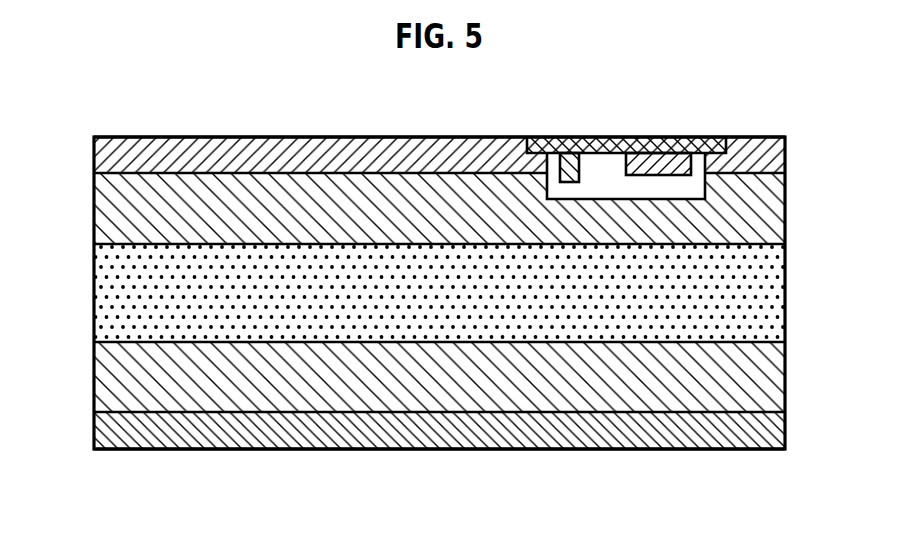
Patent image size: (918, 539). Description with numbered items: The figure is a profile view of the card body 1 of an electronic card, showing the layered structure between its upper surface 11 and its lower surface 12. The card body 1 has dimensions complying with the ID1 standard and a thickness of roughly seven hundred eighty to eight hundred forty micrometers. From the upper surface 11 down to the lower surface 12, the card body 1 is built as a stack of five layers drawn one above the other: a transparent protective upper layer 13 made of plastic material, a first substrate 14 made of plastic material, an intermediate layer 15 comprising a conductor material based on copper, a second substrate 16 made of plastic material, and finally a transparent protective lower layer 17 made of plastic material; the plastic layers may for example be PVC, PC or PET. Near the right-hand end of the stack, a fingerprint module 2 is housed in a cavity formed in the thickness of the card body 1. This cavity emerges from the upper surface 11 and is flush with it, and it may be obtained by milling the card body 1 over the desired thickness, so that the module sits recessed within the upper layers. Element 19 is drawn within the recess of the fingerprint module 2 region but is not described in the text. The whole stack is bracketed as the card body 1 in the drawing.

The card body 1 is at (797, 137).
The fingerprint module 2 is at (626, 136).
The upper surface 11 is at (438, 137).
The lower surface 12 is at (440, 450).
The transparent protective upper layer 13 is at (120, 152).
The first substrate 14 is at (120, 205).
The intermediate layer 15 is at (120, 290).
The second substrate 16 is at (120, 374).
The transparent protective lower layer 17 is at (120, 427).
The conductor / terminal 19 is at (603, 176).